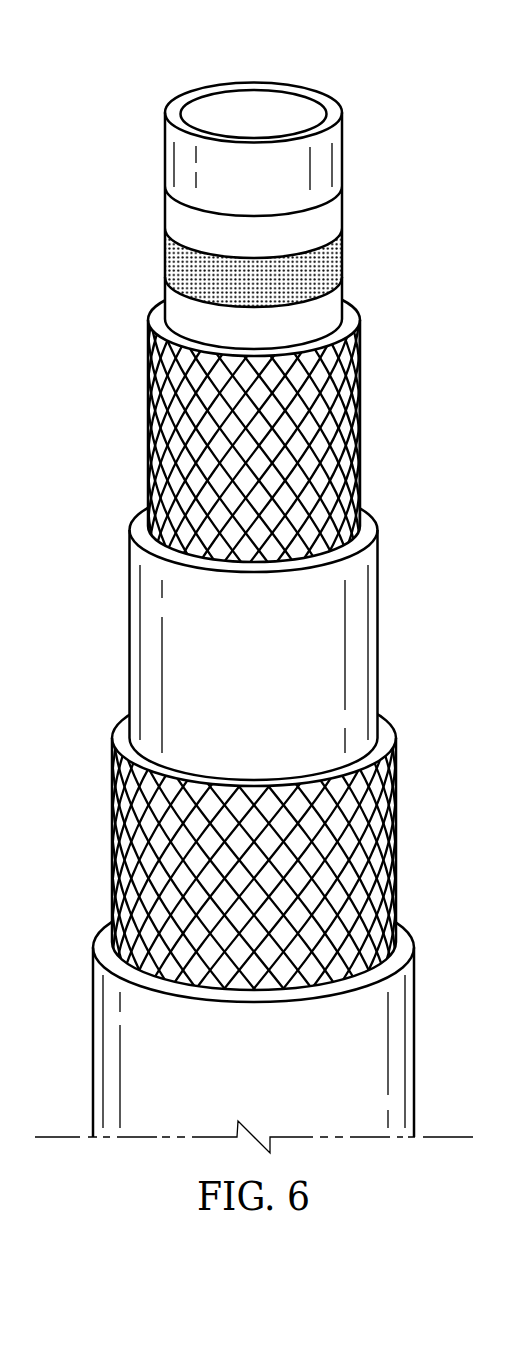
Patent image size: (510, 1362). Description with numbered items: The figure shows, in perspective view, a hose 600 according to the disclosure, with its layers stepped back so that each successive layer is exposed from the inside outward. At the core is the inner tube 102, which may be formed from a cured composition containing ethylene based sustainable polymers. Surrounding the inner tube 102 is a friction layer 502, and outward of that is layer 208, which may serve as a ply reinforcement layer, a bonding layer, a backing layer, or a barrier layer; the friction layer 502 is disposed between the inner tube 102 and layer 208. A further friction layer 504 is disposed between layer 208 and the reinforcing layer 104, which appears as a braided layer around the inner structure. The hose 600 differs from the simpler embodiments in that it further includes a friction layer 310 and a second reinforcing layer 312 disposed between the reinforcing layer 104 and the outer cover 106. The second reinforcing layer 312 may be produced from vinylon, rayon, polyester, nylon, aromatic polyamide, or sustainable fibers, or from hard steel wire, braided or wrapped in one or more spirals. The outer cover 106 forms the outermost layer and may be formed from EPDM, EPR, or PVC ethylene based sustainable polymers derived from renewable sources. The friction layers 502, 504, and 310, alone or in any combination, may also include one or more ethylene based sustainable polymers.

The hose 600 is at (111, 40).
The inner tube 102 is at (180, 175).
The friction layer 502 is at (180, 220).
The layer 208 is at (180, 263).
The friction layer 504 is at (180, 305).
The reinforcing layer 104 is at (162, 425).
The friction layer 310 is at (145, 638).
The second reinforcing layer 312 is at (124, 846).
The outer cover layer 106 is at (107, 1045).